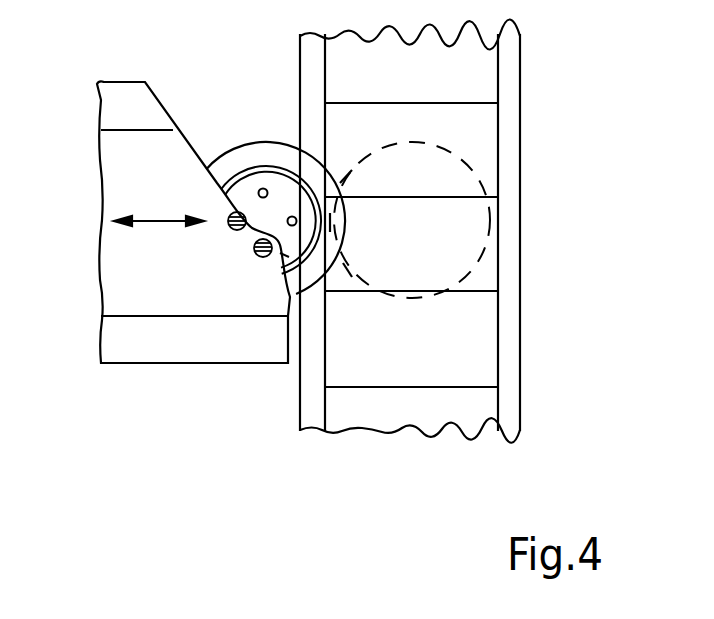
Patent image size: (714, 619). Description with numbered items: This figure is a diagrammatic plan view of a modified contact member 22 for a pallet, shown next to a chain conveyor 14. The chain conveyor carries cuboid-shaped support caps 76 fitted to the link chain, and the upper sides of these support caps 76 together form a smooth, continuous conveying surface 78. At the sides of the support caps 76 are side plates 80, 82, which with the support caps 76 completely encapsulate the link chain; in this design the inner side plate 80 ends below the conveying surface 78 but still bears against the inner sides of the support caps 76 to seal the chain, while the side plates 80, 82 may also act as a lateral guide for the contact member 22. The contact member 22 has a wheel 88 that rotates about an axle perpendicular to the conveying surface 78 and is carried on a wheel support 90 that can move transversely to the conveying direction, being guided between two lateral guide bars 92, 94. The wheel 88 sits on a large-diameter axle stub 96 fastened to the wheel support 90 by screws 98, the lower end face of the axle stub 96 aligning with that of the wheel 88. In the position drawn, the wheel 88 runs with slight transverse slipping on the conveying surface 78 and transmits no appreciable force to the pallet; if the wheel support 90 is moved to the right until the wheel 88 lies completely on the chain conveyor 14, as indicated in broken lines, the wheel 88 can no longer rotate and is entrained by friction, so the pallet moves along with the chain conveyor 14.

The chain conveyor 14 is at (461, 81).
The contact member 22 is at (171, 332).
The support caps 76 is at (473, 142).
The conveying surface 78 is at (440, 363).
The inner side plate 80 is at (313, 412).
The side plate 82 is at (510, 412).
The wheel 88 is at (261, 141).
The wheel support 90 is at (121, 155).
The lateral guide bar 92 is at (123, 103).
The lateral guide bar 94 is at (125, 332).
The axle stub 96 is at (242, 190).
The screws 98 is at (257, 248).